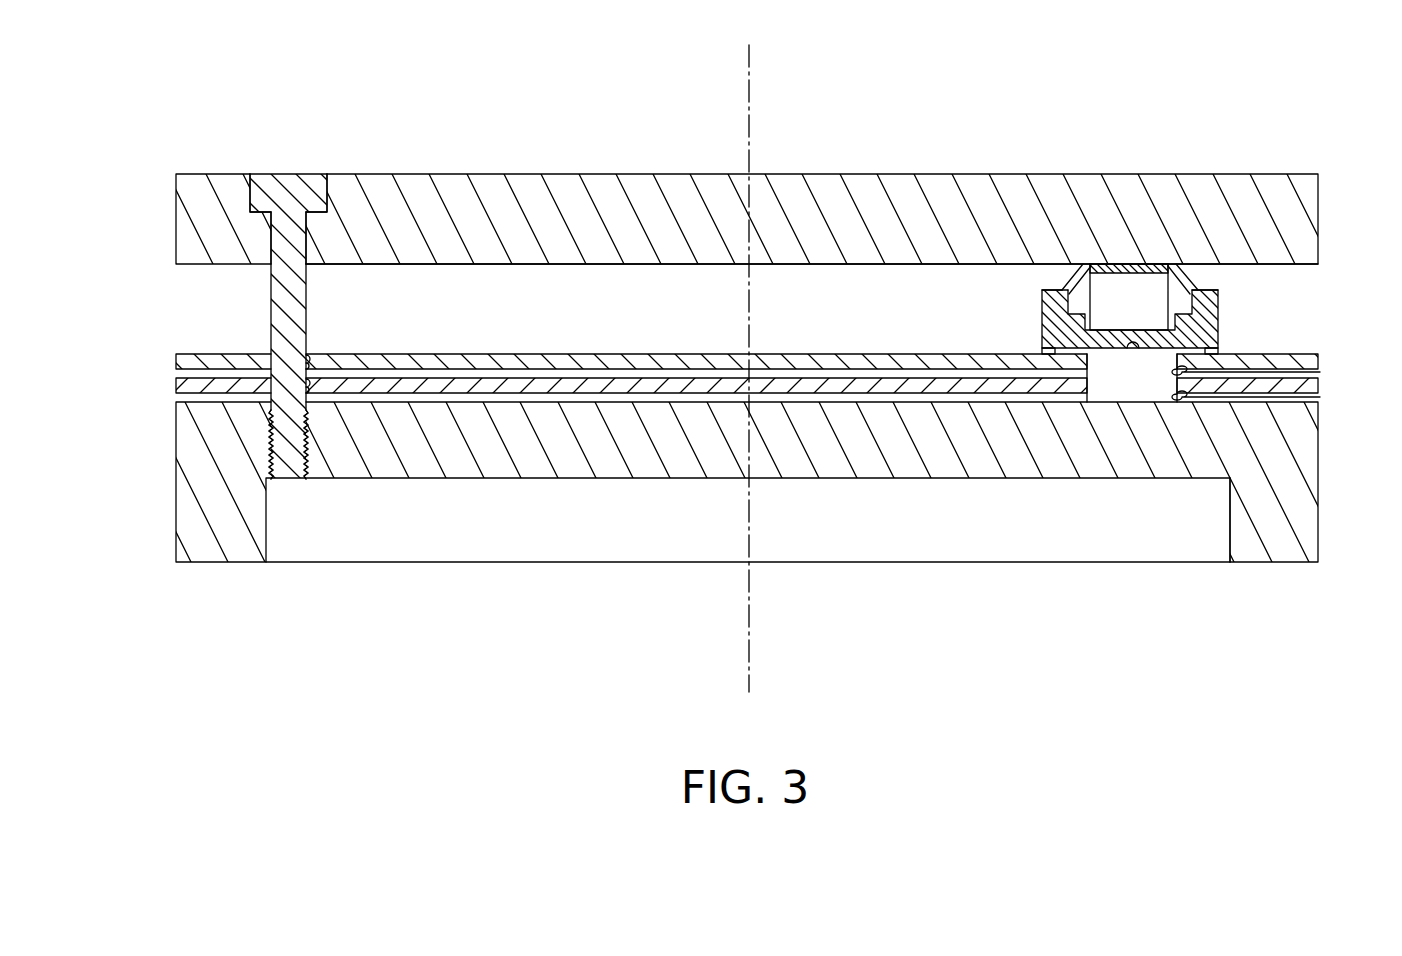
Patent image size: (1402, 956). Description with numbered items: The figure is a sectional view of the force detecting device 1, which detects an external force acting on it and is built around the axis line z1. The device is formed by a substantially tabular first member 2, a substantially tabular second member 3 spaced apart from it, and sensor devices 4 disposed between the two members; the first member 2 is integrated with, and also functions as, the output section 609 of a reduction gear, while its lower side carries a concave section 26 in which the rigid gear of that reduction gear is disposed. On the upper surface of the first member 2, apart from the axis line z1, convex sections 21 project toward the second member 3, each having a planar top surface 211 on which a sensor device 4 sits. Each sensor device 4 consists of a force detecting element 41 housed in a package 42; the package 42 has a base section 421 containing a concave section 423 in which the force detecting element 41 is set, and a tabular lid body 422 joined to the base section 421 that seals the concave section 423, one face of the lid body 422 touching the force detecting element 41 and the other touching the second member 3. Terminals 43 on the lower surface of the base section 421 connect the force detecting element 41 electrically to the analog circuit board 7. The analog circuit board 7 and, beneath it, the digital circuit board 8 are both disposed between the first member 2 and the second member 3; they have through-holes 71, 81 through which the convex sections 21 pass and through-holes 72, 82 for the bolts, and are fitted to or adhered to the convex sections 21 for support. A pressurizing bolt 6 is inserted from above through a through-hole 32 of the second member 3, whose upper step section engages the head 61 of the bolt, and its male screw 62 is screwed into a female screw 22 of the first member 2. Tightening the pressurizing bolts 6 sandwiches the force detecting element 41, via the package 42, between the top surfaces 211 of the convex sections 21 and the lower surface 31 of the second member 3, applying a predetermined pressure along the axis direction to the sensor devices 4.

The force detecting device 1 is at (1170, 119).
The first member 2 is at (756, 513).
The second member 3 is at (757, 194).
The sensor device 4 is at (1187, 330).
The pressurizing bolt 6 is at (312, 349).
The analog circuit board 7 is at (727, 340).
The digital circuit board 8 is at (721, 370).
The convex section 21 is at (1133, 346).
The female screw 22 is at (274, 440).
The concave section 26 is at (920, 530).
The lower surface 31 is at (911, 265).
The through-hole 32 is at (272, 242).
The force detecting element 41 is at (1120, 315).
The package 42 is at (1222, 295).
The terminal 43 is at (1043, 351).
The head 61 is at (312, 192).
The male screw 62 is at (272, 455).
The through-hole 71 is at (1320, 372).
The through-hole 72 is at (303, 357).
The through-hole 81 is at (1320, 397).
The through-hole 82 is at (305, 380).
The top surface 211 is at (1150, 349).
The base section 421 is at (1212, 313).
The lid body 422 is at (1185, 269).
The concave section 423 is at (1150, 337).
The output section 609 is at (1298, 515).
The axis line z1 is at (749, 661).